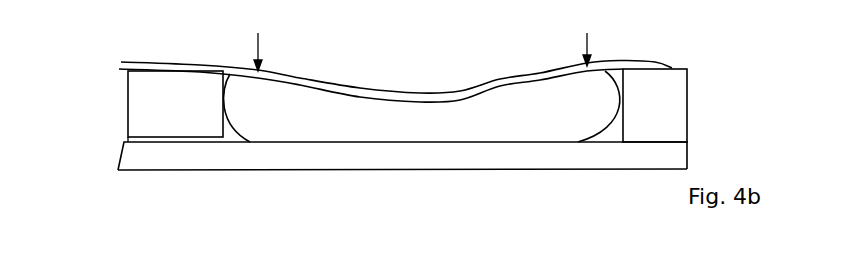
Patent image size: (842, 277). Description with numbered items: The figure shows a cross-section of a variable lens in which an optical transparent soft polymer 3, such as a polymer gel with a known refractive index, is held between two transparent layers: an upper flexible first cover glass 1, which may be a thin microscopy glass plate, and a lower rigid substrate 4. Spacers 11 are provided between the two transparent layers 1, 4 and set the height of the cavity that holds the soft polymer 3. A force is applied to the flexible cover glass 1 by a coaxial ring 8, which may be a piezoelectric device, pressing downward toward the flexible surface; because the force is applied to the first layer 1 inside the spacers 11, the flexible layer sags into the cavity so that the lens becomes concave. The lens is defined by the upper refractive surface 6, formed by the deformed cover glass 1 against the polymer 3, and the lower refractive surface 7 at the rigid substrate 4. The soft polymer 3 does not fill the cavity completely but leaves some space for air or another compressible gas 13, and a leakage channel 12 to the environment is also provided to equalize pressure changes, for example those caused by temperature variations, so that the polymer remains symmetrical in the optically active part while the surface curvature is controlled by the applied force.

The first cover glass 1 is at (670, 68).
The optical transparent soft polymer 3 is at (421, 106).
The substrate 4 is at (687, 157).
The refractive surface 6 is at (444, 57).
The refractive surface 7 is at (508, 142).
The coaxial ring 8 is at (424, 40).
The spacers 11 is at (407, 105).
The leakage channel 12 is at (128, 137).
The compressible gas 13 is at (232, 74).